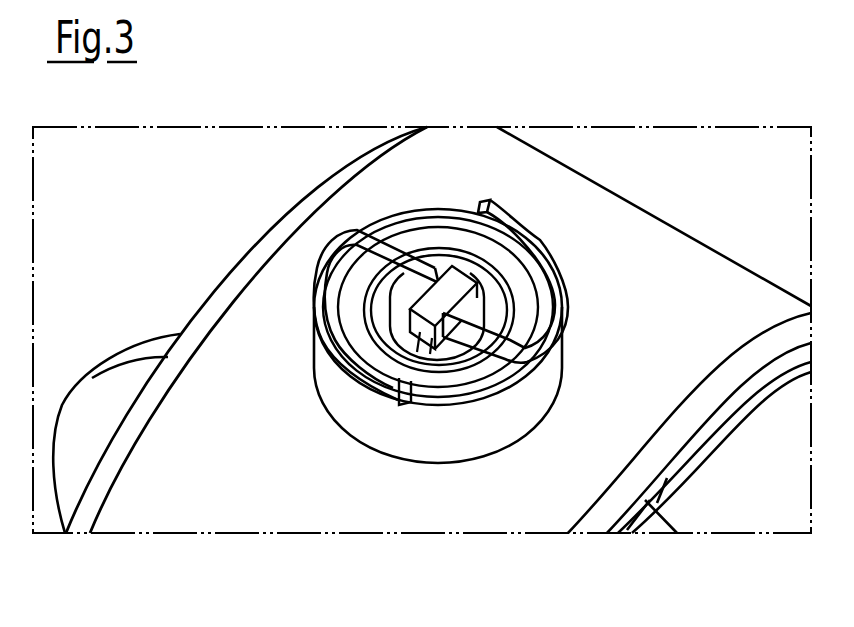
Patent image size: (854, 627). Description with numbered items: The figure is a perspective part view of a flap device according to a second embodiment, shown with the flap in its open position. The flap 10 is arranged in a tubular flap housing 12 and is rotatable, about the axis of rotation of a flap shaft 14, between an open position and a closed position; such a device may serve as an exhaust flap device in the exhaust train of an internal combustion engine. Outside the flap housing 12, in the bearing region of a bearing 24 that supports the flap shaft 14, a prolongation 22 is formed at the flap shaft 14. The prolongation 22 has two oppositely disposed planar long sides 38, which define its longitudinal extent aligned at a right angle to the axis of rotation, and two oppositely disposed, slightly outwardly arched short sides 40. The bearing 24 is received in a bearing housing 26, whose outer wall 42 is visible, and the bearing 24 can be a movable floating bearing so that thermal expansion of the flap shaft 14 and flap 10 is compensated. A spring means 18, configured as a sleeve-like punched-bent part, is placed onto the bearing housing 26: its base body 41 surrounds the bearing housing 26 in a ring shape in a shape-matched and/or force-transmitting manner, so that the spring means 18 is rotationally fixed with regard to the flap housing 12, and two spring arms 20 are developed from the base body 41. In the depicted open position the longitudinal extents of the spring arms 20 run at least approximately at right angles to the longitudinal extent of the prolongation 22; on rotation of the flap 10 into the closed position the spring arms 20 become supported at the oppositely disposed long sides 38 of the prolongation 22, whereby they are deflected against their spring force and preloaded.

The flap 10 is at (115, 397).
The flap housing 12 is at (225, 342).
The flap shaft 14 is at (448, 360).
The spring means 18 is at (508, 365).
The spring arm 20 is at (405, 272).
The prolongation 22 is at (458, 278).
The bearing 24 is at (492, 295).
The bearing housing 26 is at (527, 293).
The long sides 38 is at (432, 360).
The short sides 40 is at (412, 352).
The base body 41 is at (544, 384).
The outer wall 42 is at (542, 402).